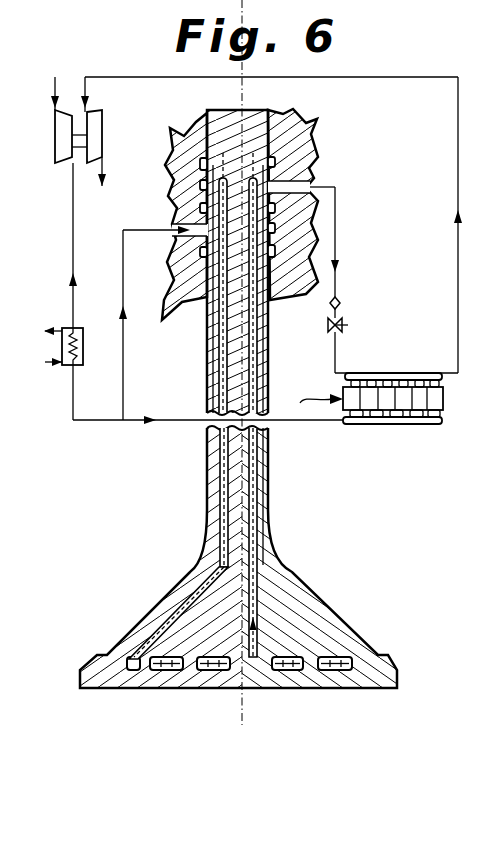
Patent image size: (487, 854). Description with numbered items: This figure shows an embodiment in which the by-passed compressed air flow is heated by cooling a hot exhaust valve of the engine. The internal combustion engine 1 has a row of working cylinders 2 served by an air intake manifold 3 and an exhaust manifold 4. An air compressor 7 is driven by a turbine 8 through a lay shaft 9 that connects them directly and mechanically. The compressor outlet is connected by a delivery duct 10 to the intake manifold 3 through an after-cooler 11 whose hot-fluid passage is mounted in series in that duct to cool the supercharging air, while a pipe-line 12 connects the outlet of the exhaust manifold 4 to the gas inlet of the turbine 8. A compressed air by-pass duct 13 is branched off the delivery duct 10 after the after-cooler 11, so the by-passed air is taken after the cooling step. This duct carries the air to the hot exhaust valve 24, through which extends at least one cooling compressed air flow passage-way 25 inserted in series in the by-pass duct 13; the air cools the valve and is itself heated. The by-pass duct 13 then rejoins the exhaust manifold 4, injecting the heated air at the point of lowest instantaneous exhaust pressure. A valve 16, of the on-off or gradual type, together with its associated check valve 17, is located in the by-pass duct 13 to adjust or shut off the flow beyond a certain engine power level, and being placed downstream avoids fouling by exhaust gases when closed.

The diesel engine 1 is at (319, 388).
The working cylinders 2 is at (438, 398).
The air intake manifold 3 is at (373, 425).
The exhaust manifold 4 is at (415, 373).
The air compressor 7 is at (66, 117).
The turbine 8 is at (98, 132).
The lay shaft 9 is at (77, 148).
The delivery duct 10 is at (73, 297).
The after-cooler 11 is at (80, 368).
The pipe-line 12 is at (453, 138).
The compressed air by-pass duct 13 is at (125, 338).
The valve 16 is at (334, 323).
The check valve 17 is at (342, 303).
The exhaust valve 24 is at (303, 612).
The cooling compressed air flow passage-way 25 is at (250, 510).